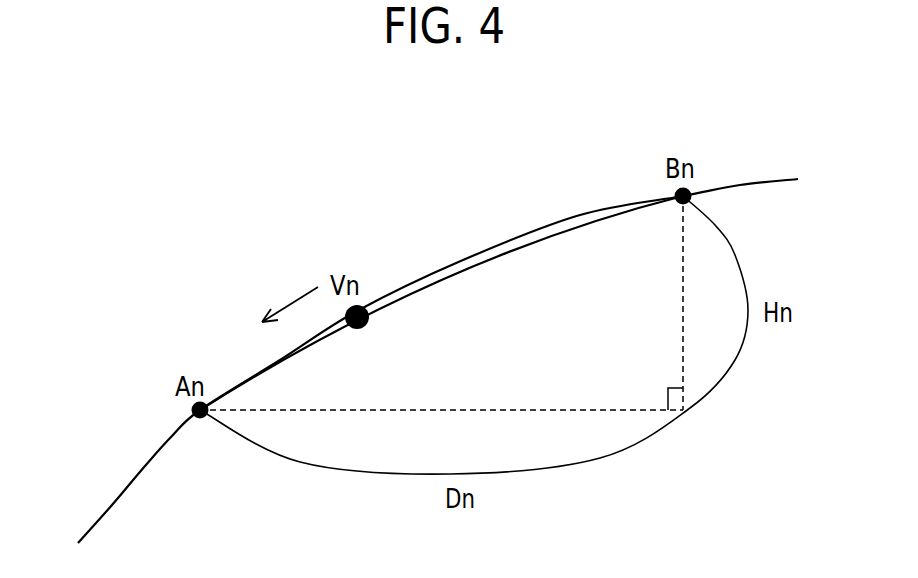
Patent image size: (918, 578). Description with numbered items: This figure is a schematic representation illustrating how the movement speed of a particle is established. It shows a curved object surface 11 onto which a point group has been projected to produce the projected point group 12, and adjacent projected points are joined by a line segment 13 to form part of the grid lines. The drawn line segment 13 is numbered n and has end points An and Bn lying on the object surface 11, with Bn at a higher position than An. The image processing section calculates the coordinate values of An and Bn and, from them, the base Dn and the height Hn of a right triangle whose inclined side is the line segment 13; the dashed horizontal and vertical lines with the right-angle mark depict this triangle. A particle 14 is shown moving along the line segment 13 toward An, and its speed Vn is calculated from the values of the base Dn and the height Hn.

The object surface 11 is at (733, 187).
The projected point group 12 is at (190, 408).
The line segment 13 is at (468, 270).
The particle 14 is at (366, 326).